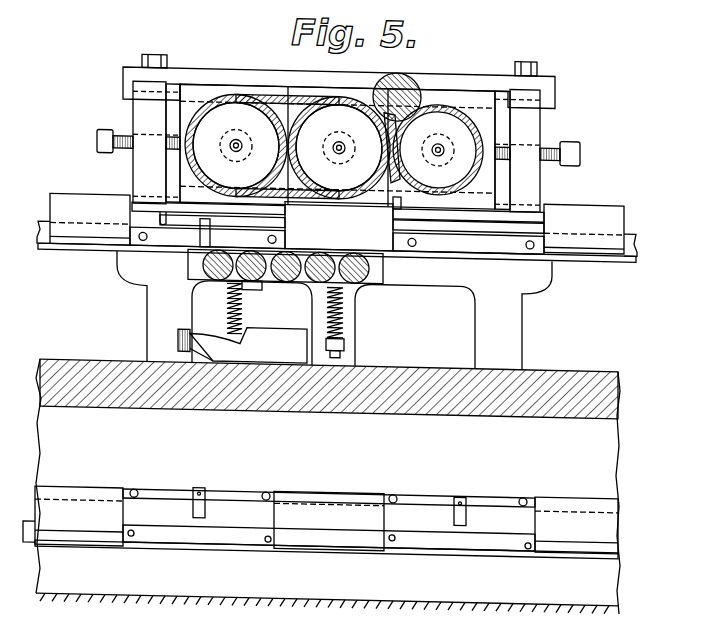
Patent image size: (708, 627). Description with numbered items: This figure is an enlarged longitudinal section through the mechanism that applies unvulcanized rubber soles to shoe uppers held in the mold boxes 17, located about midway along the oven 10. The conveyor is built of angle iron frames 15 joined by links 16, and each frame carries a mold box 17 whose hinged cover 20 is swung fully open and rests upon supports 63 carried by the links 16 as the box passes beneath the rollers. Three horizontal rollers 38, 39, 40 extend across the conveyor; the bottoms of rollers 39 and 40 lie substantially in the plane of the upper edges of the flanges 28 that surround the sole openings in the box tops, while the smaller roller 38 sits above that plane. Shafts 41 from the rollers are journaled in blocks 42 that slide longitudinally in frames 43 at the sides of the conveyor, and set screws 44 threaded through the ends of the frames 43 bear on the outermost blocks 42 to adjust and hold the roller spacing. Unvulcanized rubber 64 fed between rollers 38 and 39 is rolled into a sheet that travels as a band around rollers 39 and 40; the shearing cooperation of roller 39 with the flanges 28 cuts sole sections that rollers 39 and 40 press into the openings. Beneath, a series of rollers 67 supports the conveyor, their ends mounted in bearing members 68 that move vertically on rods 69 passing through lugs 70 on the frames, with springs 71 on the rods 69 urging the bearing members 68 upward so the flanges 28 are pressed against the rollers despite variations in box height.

The oven 10 is at (328, 486).
The angle iron frames 15 is at (115, 251).
The links 16 is at (176, 250).
The mold box 17 is at (60, 215).
The cover 20 is at (212, 220).
The flange 28 is at (397, 197).
The roller 38 is at (480, 132).
The roller 39 is at (318, 100).
The roller 40 is at (182, 122).
The shafts 41 is at (338, 148).
The blocks 42 is at (210, 92).
The frames 43 is at (128, 78).
The set screws 44 is at (97, 147).
The supports 63 is at (460, 523).
The unvulcanized rubber 64 is at (410, 78).
The rollers 67 is at (296, 288).
The bearing members 68 is at (383, 280).
The rods 69 is at (346, 311).
The lugs 70 is at (178, 346).
The springs 71 is at (228, 305).